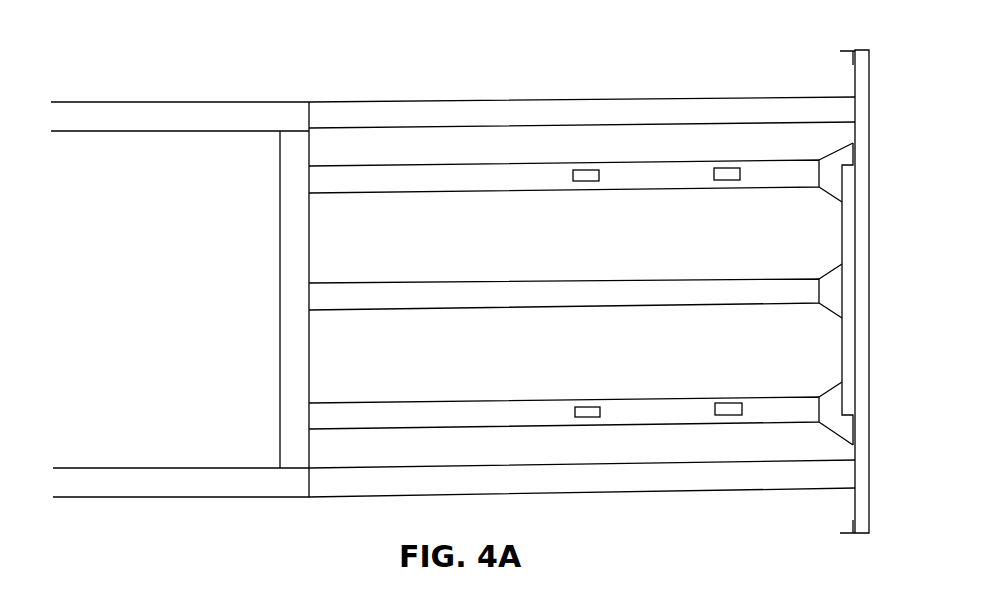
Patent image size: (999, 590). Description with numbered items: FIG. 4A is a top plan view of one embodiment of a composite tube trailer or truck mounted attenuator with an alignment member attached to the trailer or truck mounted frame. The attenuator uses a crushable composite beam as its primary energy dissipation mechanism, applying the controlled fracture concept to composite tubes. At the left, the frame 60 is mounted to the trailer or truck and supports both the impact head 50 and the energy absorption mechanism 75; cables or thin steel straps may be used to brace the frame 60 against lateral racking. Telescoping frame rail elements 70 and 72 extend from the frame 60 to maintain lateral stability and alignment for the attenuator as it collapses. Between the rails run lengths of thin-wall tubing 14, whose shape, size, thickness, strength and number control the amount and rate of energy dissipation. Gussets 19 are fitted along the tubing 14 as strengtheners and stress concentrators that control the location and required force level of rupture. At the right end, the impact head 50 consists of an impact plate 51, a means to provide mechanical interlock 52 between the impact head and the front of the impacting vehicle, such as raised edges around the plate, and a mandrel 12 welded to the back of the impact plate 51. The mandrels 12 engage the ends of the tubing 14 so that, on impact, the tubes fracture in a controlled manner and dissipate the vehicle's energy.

The mandrel 12 is at (835, 147).
The thin-wall tubing 14 is at (495, 162).
The gussets 19 is at (588, 181).
The impact head/plate 50 is at (908, 262).
The impact plate 51 is at (848, 237).
The means to provide mechanical interlock 52 is at (867, 137).
The frame 60 is at (208, 468).
The telescoping frame rail element 70 is at (343, 113).
The telescoping frame rail element 72 is at (185, 112).
The energy absorption mechanism 75 is at (400, 310).